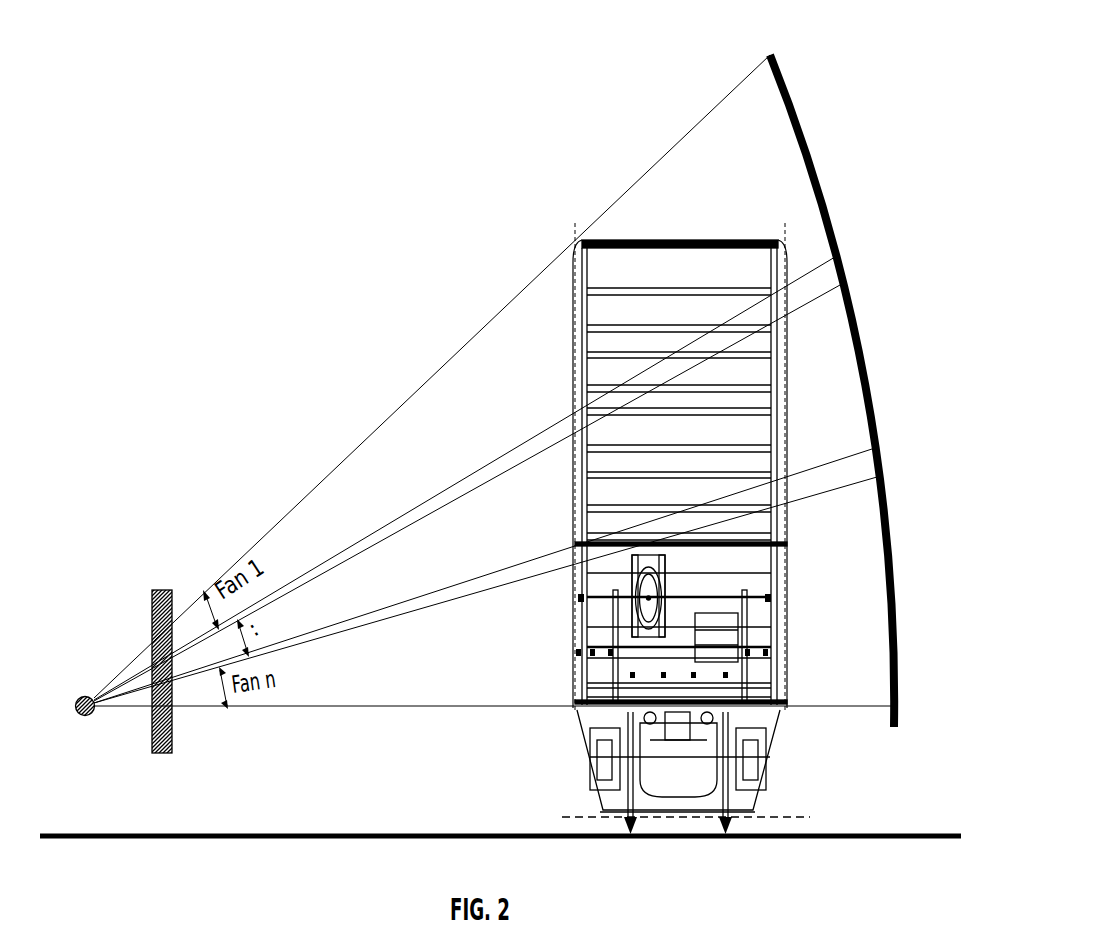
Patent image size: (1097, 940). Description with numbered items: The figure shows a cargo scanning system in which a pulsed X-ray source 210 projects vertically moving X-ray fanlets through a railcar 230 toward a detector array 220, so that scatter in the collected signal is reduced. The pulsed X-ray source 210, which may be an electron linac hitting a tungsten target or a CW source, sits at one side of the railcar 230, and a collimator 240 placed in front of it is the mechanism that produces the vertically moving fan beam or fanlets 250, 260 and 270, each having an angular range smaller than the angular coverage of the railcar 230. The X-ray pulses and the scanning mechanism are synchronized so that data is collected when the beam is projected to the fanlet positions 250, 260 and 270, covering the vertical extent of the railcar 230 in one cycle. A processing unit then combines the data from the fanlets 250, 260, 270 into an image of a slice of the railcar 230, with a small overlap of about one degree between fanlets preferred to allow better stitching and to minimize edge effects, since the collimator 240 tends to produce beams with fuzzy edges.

The pulsed X-ray source 210 is at (80, 679).
The detector array 220 is at (818, 172).
The railcar 230 is at (686, 486).
The collimator 240 is at (161, 612).
The fanlet 250 is at (467, 479).
The fanlet 260 is at (485, 575).
The fanlet 270 is at (493, 689).